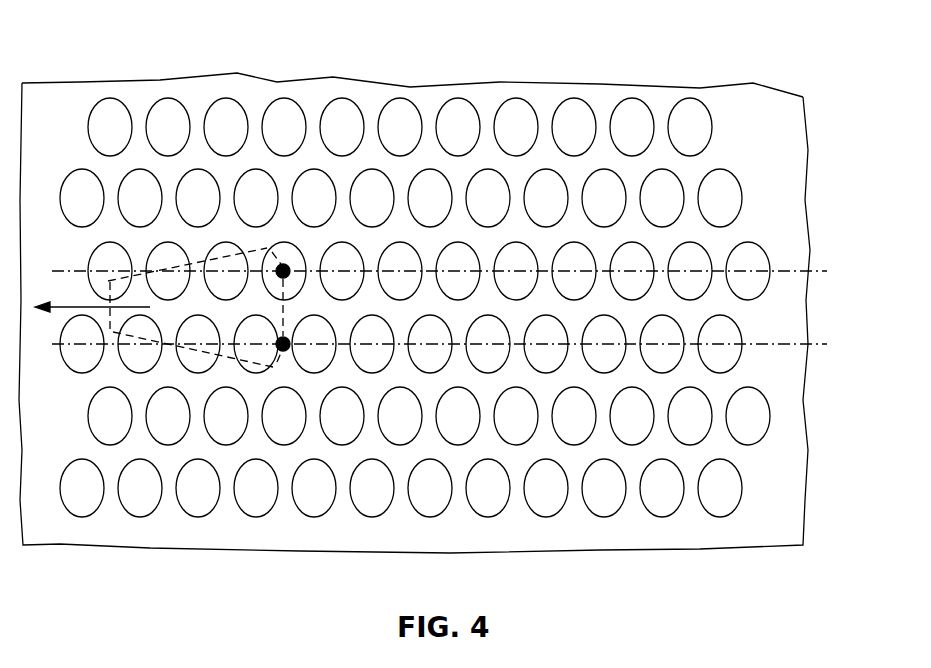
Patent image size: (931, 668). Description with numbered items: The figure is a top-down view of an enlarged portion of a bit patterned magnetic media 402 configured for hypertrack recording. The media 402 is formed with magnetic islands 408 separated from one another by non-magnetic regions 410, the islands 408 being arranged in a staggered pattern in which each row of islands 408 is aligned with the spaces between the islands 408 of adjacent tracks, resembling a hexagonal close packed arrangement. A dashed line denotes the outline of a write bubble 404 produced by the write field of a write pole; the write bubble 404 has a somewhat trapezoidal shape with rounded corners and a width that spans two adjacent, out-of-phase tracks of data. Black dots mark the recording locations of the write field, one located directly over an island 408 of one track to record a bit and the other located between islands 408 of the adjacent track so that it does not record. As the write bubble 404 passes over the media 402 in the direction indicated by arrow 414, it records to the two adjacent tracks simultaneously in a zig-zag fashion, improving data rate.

The bit patterned magnetic media 402 is at (377, 82).
The write bubble 404 is at (195, 257).
The magnetic islands 408 is at (158, 112).
The non-magnetic regions 410 is at (238, 92).
The arrow 414 is at (75, 307).